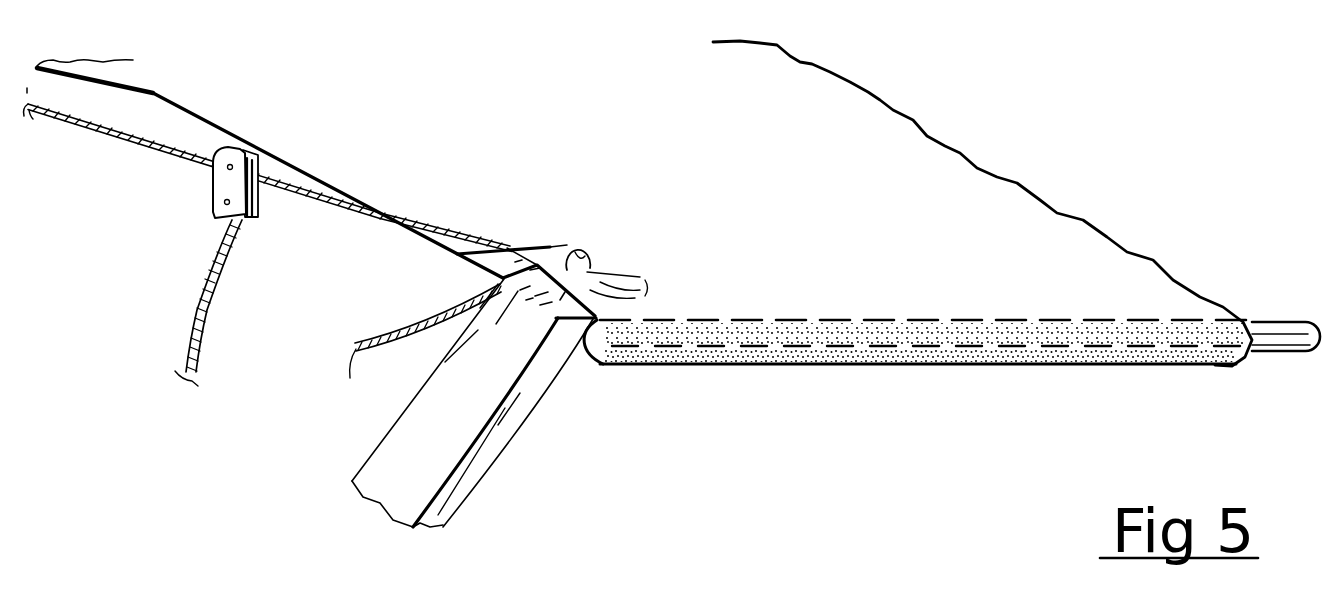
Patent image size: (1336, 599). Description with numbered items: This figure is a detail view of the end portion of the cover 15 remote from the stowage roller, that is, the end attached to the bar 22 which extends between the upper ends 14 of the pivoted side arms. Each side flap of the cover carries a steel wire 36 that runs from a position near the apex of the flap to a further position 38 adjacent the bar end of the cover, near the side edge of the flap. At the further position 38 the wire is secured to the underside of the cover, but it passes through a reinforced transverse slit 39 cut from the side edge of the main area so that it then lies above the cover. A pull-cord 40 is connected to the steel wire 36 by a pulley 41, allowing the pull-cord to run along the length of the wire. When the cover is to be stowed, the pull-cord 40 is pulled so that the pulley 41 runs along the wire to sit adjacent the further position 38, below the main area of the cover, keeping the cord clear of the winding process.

The upper ends of the side arms 14 is at (513, 347).
The cover 15 is at (970, 207).
The bar 22 is at (1273, 330).
The steel wire 36 is at (118, 137).
The further position 38 is at (623, 295).
The transverse slit 39 is at (457, 252).
The pull-cord 40 is at (392, 324).
The pulley 41 is at (222, 187).